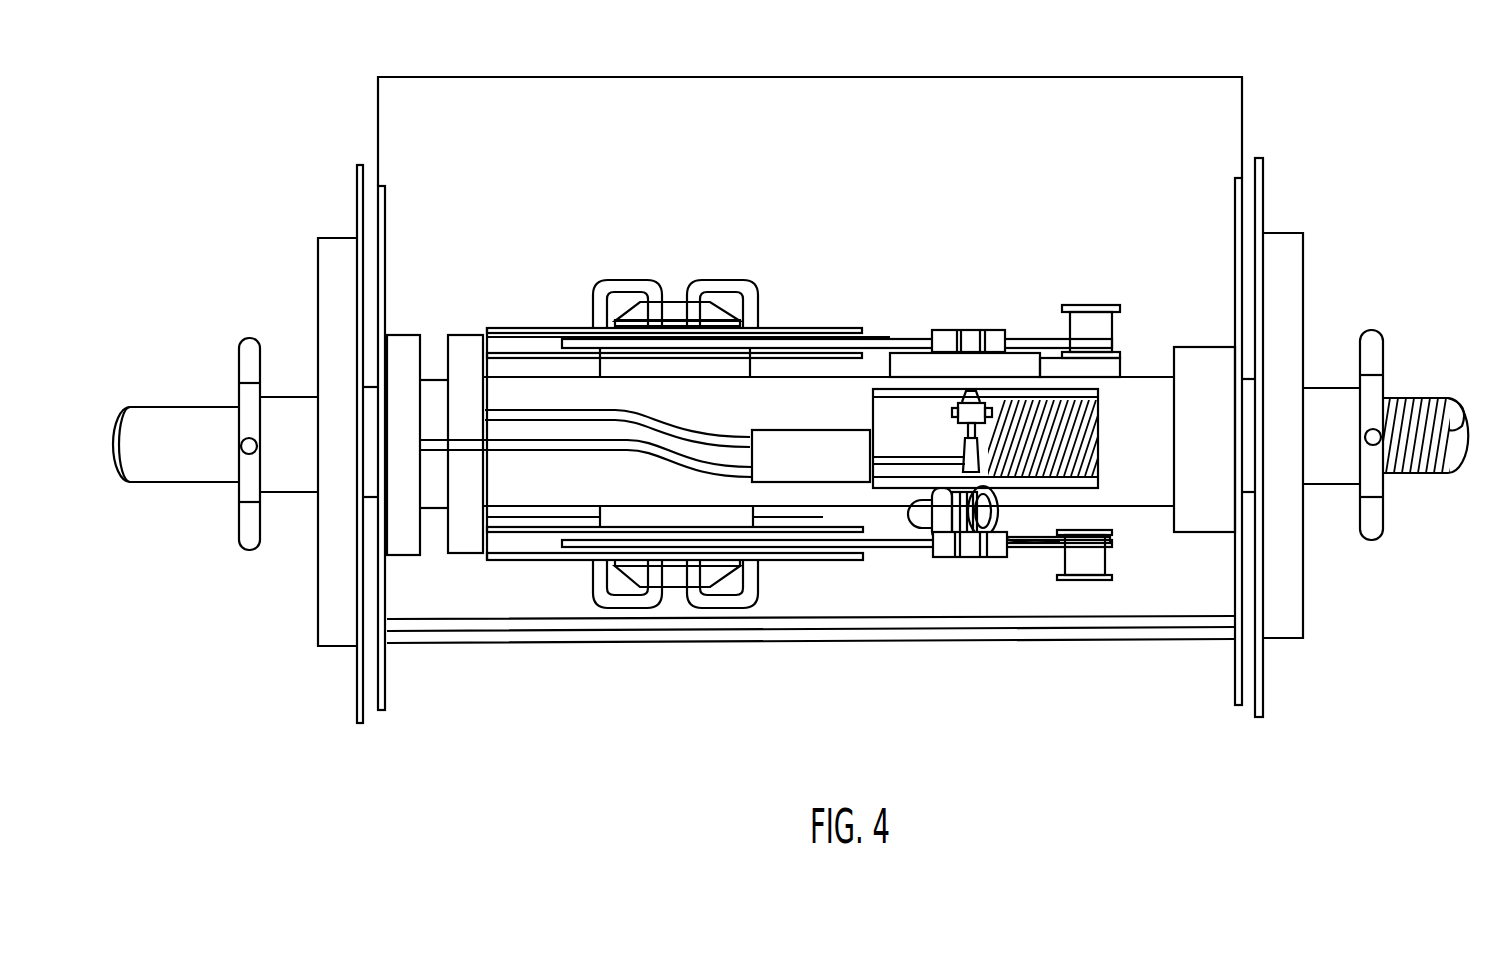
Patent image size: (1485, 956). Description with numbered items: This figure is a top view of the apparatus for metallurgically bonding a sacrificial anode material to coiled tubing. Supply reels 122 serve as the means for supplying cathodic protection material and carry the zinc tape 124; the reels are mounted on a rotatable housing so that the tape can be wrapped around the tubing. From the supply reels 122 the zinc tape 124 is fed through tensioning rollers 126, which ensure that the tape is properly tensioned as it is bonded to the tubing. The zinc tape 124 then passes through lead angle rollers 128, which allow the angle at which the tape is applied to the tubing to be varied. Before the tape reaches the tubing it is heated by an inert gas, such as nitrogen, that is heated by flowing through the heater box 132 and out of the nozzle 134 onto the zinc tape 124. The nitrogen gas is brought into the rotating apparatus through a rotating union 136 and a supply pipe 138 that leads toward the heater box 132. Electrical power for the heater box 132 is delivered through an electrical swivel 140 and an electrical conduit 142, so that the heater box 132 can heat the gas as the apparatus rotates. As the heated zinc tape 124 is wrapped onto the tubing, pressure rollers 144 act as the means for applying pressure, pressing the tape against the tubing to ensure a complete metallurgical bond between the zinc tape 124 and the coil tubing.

The supply reels 122 is at (560, 327).
The zinc tape 124 is at (876, 338).
The tensioning rollers 126 is at (937, 330).
The lead angle rollers 128 is at (1113, 327).
The heater box 132 is at (767, 482).
The nozzle 134 is at (963, 443).
The rotating union 136 is at (395, 336).
The supply pipe 138 is at (503, 452).
The electrical swivel 140 is at (467, 335).
The electrical conduit 142 is at (647, 418).
The pressure rollers 144 is at (985, 400).